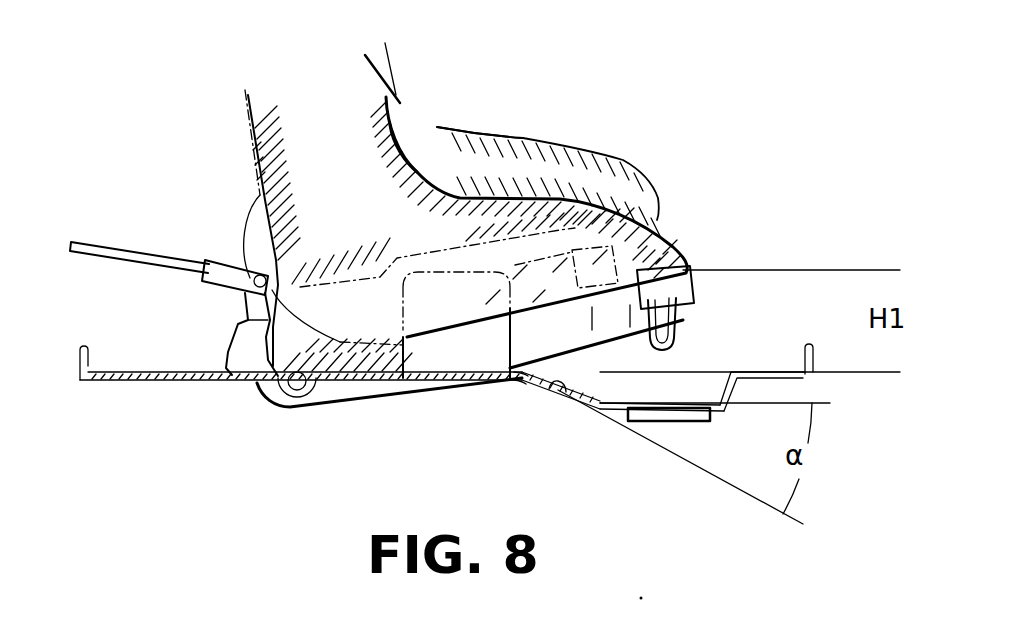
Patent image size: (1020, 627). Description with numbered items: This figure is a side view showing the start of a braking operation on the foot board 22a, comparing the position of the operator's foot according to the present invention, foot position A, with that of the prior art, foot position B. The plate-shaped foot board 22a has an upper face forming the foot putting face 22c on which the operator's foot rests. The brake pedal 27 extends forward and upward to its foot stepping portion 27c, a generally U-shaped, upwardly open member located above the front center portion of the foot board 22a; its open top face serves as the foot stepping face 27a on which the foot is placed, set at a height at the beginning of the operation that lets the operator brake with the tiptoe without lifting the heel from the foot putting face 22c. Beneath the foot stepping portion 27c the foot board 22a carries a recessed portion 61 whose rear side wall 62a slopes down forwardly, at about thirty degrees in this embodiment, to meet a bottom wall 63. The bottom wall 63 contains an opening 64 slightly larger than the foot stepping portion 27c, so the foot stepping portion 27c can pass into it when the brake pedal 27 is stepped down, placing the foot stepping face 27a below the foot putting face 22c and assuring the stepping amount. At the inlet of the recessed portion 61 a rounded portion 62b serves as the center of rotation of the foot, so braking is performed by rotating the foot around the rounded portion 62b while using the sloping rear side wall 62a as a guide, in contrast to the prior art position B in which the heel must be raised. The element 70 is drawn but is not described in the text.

The foot board 22a is at (165, 390).
The foot putting face 22c is at (140, 372).
The brake pedal 27 is at (327, 407).
The foot stepping face 27a is at (645, 290).
The foot stepping portion 27c is at (694, 270).
The recessed portion 61 is at (600, 392).
The rear side wall 62a is at (540, 388).
The rounded portion 62b is at (520, 383).
The bottom wall 63 is at (693, 403).
The opening 64 is at (667, 413).
The seat cushion pad member 70 is at (460, 287).
The foot position according to the present invention A is at (401, 137).
The foot position of the prior art B is at (454, 130).